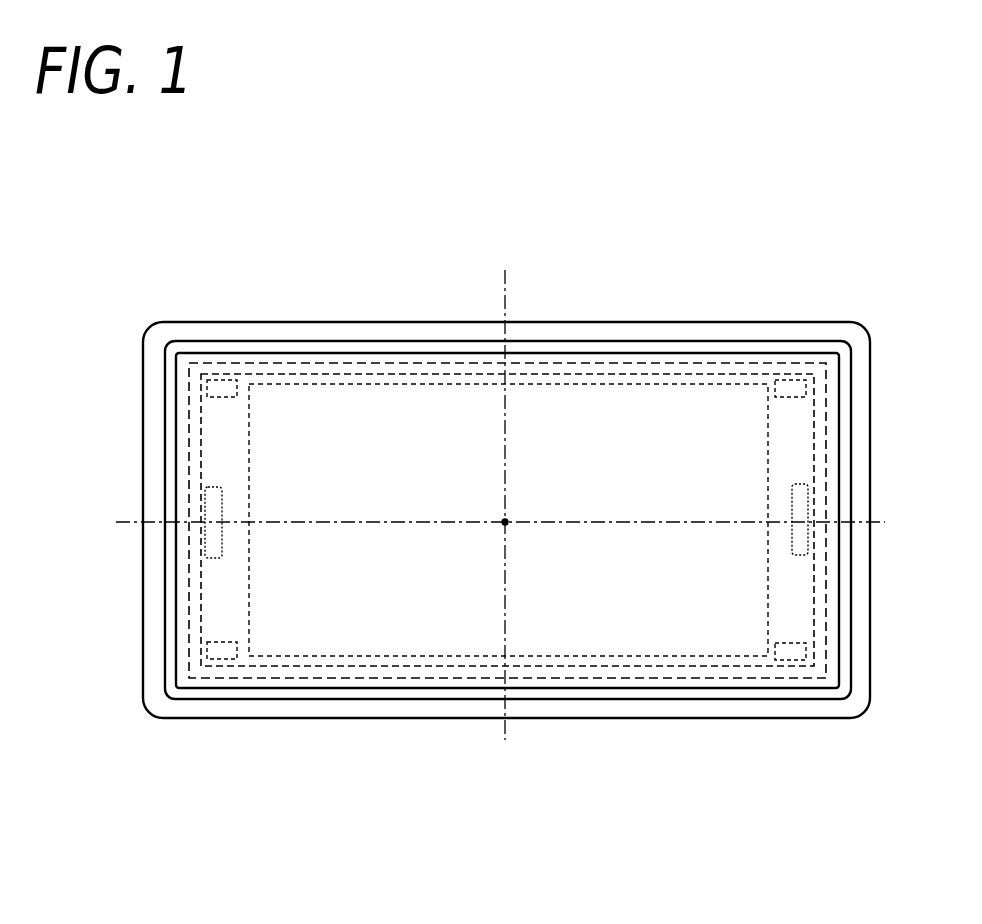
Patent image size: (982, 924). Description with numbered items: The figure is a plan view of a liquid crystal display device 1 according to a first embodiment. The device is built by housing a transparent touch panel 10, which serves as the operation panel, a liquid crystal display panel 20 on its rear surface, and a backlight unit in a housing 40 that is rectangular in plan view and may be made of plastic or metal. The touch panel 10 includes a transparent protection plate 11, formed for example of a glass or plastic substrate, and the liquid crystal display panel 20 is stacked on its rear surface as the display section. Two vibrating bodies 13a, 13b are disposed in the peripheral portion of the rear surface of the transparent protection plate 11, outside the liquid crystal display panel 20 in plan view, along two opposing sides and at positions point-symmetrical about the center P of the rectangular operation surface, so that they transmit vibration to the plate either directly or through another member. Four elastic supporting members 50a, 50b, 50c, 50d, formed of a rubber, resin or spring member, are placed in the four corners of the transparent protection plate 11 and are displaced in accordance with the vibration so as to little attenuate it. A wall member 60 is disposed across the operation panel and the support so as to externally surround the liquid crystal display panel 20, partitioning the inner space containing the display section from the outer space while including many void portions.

The liquid crystal display device 1 is at (643, 246).
The touch panel 10 is at (304, 352).
The transparent protection plate 11 is at (335, 689).
The liquid crystal display panel 20 is at (714, 384).
The housing 40 is at (637, 713).
The wall member 60 is at (335, 378).
The elastic supporting member 50a is at (222, 380).
The elastic supporting member 50b is at (794, 380).
The elastic supporting member 50c is at (220, 660).
The elastic supporting member 50d is at (790, 661).
The vibrating body 13a is at (222, 545).
The vibrating body 13b is at (793, 536).
The center P is at (505, 522).